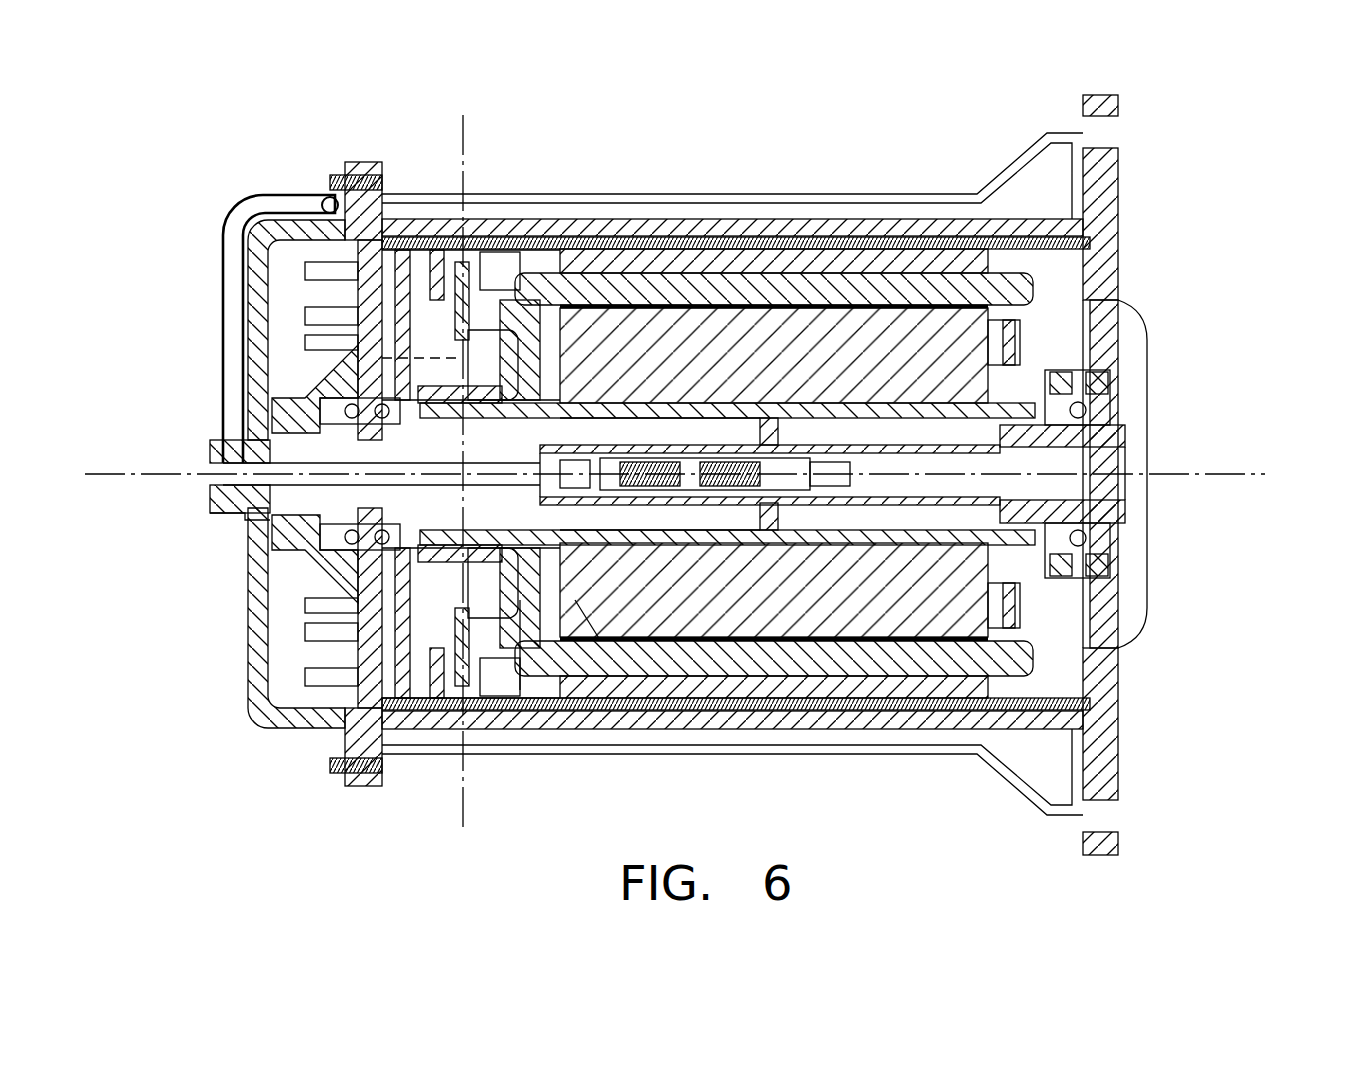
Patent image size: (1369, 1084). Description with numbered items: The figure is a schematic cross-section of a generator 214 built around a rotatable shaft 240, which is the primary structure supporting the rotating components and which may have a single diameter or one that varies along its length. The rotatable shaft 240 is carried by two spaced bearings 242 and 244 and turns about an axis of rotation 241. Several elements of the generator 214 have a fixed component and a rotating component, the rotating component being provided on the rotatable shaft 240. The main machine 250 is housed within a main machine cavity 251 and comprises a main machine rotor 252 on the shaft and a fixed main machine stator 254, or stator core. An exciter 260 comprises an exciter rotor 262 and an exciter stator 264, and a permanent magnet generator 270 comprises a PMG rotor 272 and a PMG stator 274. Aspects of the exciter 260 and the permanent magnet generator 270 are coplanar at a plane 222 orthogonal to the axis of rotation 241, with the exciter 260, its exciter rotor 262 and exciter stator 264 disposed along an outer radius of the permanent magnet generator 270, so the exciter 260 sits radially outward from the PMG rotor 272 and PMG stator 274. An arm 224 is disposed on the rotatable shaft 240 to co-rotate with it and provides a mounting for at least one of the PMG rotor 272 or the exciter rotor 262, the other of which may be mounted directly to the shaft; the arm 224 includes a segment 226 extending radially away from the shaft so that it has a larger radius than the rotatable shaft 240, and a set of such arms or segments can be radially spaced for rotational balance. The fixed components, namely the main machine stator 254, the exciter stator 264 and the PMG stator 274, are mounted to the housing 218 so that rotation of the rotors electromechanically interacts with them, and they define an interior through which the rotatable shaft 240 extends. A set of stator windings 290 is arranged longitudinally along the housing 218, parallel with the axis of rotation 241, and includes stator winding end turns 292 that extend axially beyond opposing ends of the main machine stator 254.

The generator 214 is at (708, 478).
The housing 218 is at (682, 232).
The plane 222 is at (463, 808).
The arm 224 is at (528, 600).
The segment 226 is at (540, 600).
The rotatable shaft 240 is at (1128, 412).
The axis of rotation 241 is at (1220, 480).
The bearing 242 is at (330, 522).
The bearing 244 is at (1112, 558).
The main machine 250 is at (788, 480).
The main machine cavity 251 is at (1043, 290).
The main machine rotor 252 is at (962, 333).
The main machine stator 254 is at (958, 258).
The exciter 260 is at (355, 426).
The exciter rotor 262 is at (462, 320).
The exciter stator 264 is at (462, 420).
The permanent magnet generator 270 is at (362, 650).
The PMG rotor 272 is at (395, 358).
The PMG stator 274 is at (440, 568).
The set of stator windings 290 is at (878, 262).
The stator winding end turns 292 is at (1040, 275).